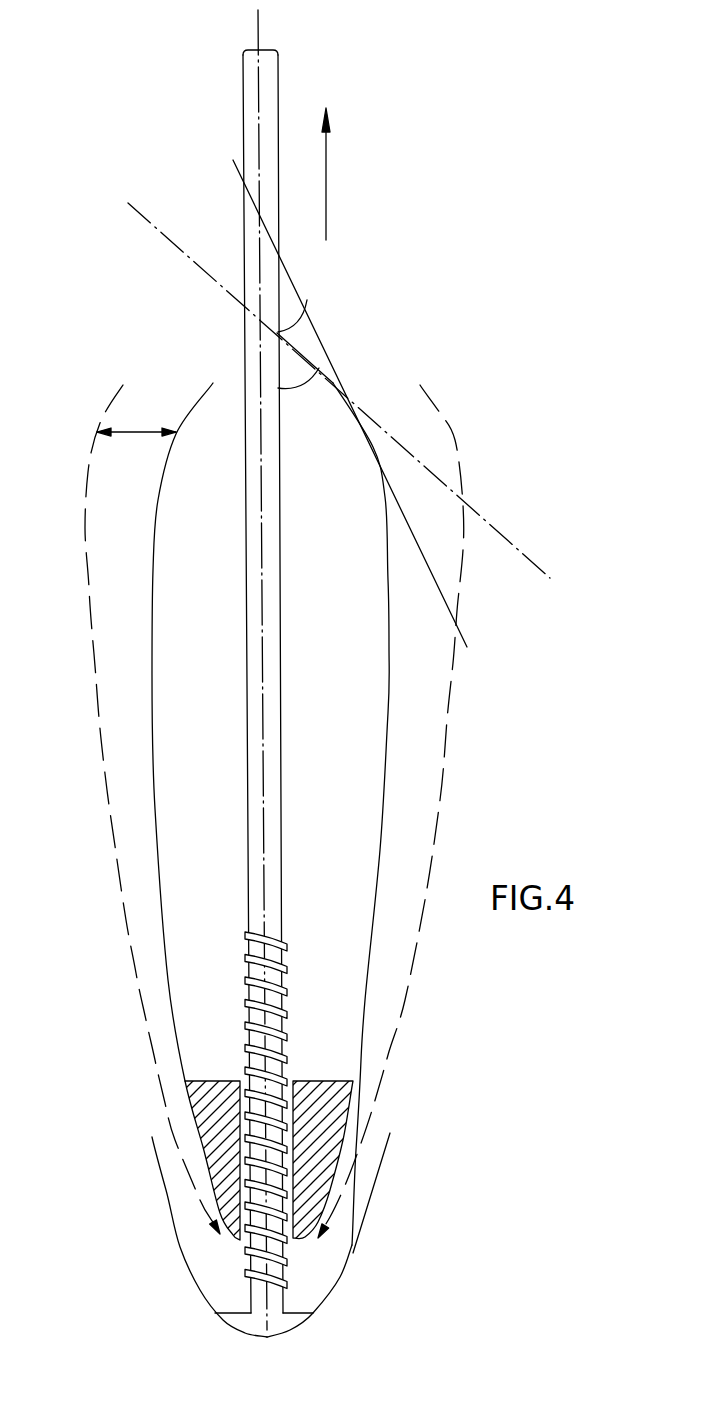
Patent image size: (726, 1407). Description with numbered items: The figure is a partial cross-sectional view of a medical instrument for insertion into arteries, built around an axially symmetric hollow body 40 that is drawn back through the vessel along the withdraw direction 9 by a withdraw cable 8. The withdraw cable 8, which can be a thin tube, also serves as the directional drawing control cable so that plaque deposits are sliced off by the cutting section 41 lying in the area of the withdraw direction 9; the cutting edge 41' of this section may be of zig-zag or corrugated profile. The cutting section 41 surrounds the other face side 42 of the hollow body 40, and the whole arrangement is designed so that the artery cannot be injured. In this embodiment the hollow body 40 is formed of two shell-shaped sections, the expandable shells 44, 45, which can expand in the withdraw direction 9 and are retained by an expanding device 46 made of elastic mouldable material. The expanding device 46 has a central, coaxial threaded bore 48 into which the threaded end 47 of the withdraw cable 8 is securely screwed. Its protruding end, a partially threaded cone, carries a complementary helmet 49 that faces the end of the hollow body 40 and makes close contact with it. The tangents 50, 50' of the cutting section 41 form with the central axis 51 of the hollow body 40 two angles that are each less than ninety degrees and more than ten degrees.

The withdraw cable 8 is at (244, 243).
The withdraw direction 9 is at (334, 174).
The hollow body 40 is at (562, 490).
The cutting section 41 is at (360, 363).
The cutting edge 41' is at (154, 361).
The face side 42 is at (222, 1254).
The expandable shell 44 is at (155, 760).
The expandable shell 45 is at (390, 670).
The expanding device 46 is at (337, 1117).
The threaded end 47 is at (285, 963).
The threaded bore 48 is at (237, 1118).
The helmet 49 is at (347, 1274).
The tangent 50 is at (366, 390).
The tangent 50' is at (375, 403).
The central axis 51 is at (262, 30).